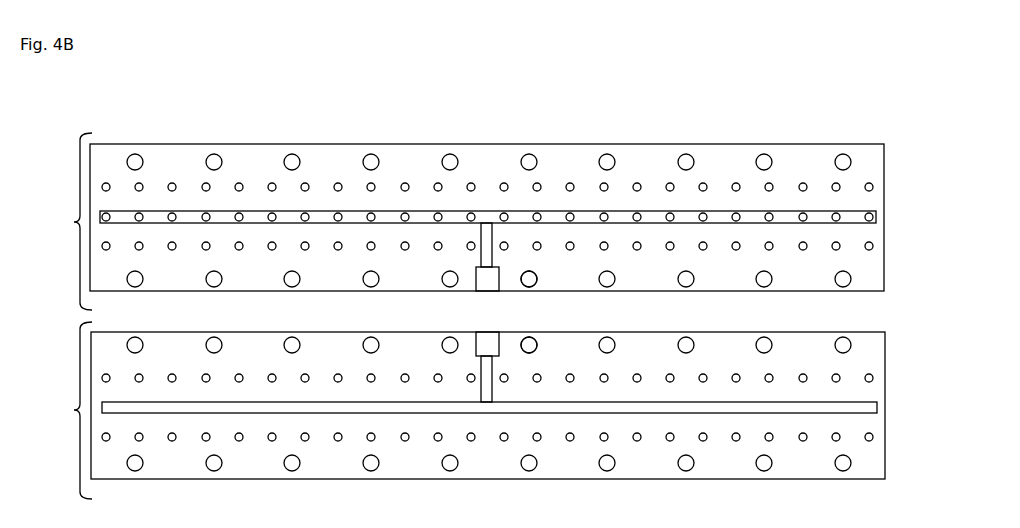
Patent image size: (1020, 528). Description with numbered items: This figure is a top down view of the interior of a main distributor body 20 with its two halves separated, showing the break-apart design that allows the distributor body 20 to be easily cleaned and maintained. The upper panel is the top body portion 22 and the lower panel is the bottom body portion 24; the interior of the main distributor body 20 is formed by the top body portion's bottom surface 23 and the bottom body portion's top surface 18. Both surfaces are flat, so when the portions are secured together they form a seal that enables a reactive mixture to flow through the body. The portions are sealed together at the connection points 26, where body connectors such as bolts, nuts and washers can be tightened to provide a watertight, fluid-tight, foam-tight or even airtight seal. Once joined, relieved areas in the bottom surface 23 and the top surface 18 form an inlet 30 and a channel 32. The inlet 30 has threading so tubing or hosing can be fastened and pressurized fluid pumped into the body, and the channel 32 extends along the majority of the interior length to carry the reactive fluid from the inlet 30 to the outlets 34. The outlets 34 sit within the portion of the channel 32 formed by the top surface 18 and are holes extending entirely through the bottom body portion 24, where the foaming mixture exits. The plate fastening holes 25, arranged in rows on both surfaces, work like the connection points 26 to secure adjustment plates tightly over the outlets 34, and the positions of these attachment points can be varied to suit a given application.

The main distributor body 20 is at (482, 299).
The bottom body portion 24 is at (74, 222).
The top body portion 22 is at (74, 410).
The top surface 18 is at (877, 267).
The bottom surface 23 is at (875, 463).
The plate fastening holes 25 is at (339, 241).
The channel 32 is at (258, 219).
The outlets 34 is at (602, 213).
The inlet 30 is at (485, 283).
The connection points 26 is at (538, 284).